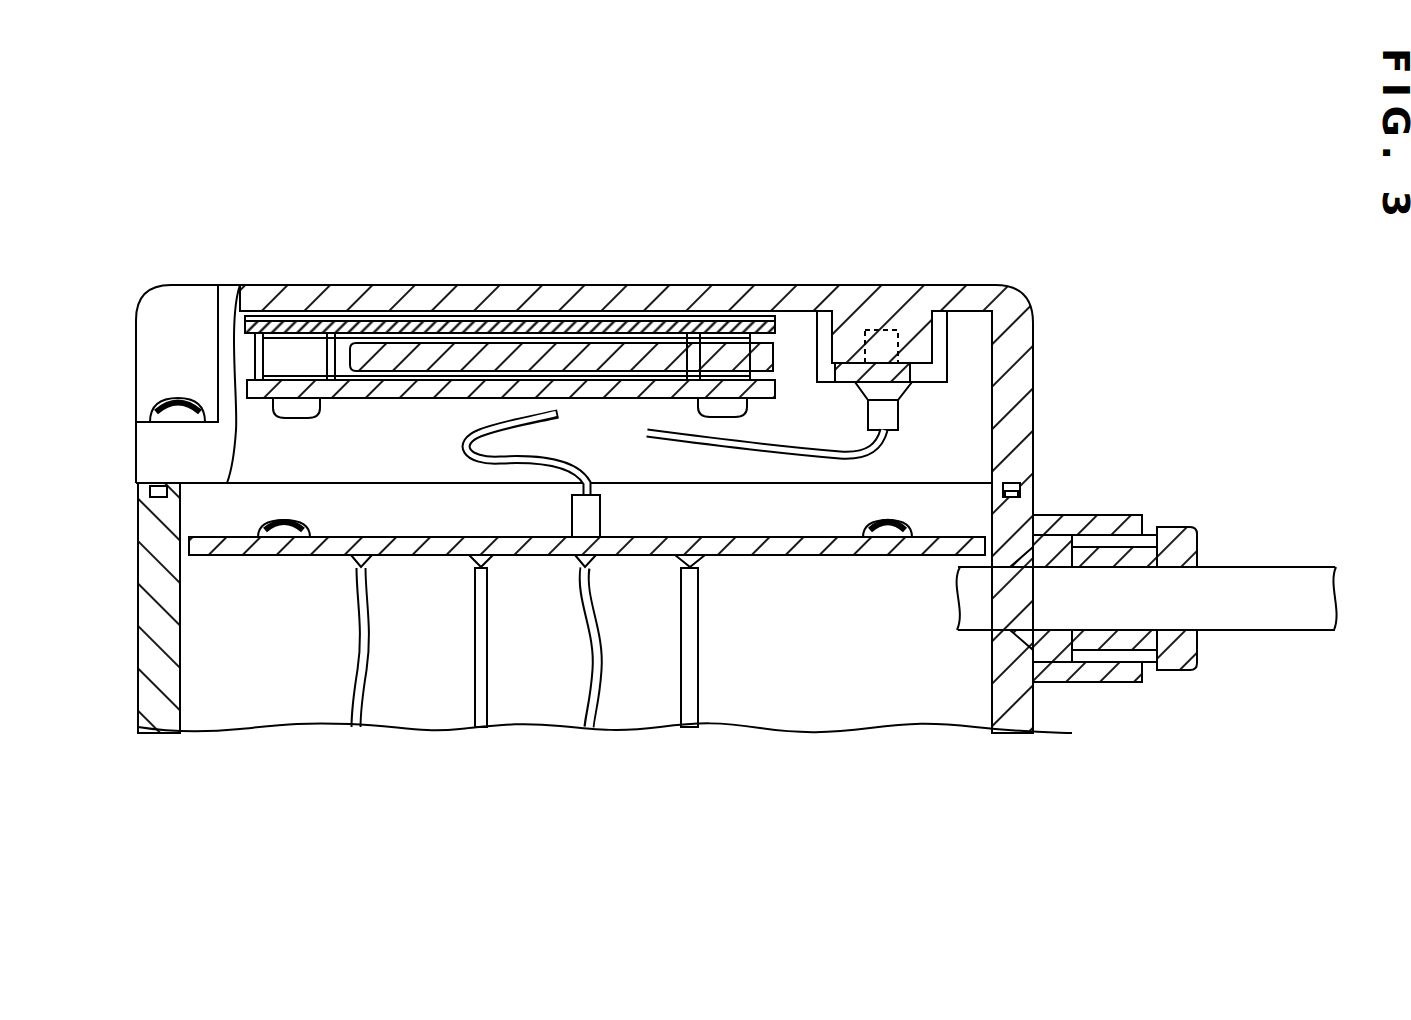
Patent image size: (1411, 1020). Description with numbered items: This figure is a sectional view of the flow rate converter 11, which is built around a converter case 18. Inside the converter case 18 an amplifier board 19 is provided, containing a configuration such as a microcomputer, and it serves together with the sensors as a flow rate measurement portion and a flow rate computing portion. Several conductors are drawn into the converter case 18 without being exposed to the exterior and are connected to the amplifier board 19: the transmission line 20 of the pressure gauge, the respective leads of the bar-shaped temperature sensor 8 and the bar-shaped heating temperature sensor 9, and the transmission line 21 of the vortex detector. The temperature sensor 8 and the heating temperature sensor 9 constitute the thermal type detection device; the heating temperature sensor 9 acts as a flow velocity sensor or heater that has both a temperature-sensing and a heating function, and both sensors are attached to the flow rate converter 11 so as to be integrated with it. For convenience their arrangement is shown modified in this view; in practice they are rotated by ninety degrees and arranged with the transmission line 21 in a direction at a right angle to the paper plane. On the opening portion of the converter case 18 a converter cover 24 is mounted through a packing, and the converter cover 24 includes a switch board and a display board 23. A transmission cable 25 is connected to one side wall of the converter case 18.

The temperature sensor 8 is at (699, 688).
The heating temperature sensor 9 is at (476, 688).
The flow rate converter 11 is at (1040, 402).
The converter case 18 is at (163, 612).
The amplifier board 19 is at (226, 537).
The transmission line 20 is at (353, 688).
The transmission line 21 is at (597, 688).
The display board 23 is at (563, 355).
The converter cover 24 is at (460, 388).
The transmission cable 25 is at (1270, 565).